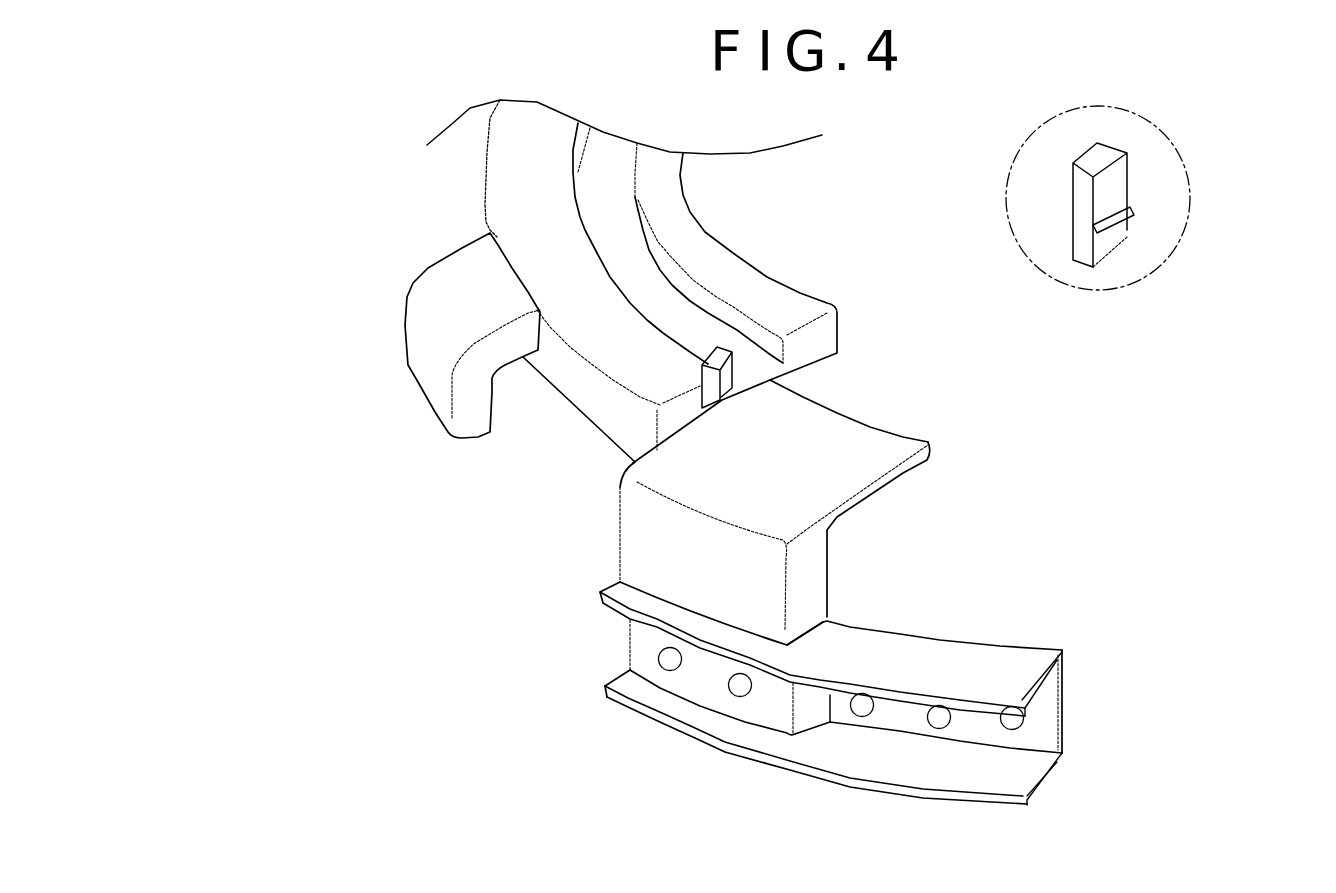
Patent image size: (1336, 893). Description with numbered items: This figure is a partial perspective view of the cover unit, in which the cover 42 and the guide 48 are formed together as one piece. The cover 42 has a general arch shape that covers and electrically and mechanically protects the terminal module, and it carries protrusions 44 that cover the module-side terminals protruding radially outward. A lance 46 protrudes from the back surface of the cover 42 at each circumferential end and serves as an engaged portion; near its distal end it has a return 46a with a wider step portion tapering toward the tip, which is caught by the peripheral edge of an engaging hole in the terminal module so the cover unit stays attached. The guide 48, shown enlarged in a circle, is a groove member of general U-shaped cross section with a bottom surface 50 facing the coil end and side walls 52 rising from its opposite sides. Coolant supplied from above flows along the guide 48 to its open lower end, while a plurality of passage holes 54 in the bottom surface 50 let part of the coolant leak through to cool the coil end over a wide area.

The cover 42 is at (582, 397).
The protrusion 44 is at (435, 315).
The lance 46 is at (947, 221).
The return 46a is at (1191, 238).
The guide 48 is at (841, 706).
The bottom surface 50 is at (1047, 727).
The side wall 52 is at (970, 668).
The passage hole 54 is at (733, 687).